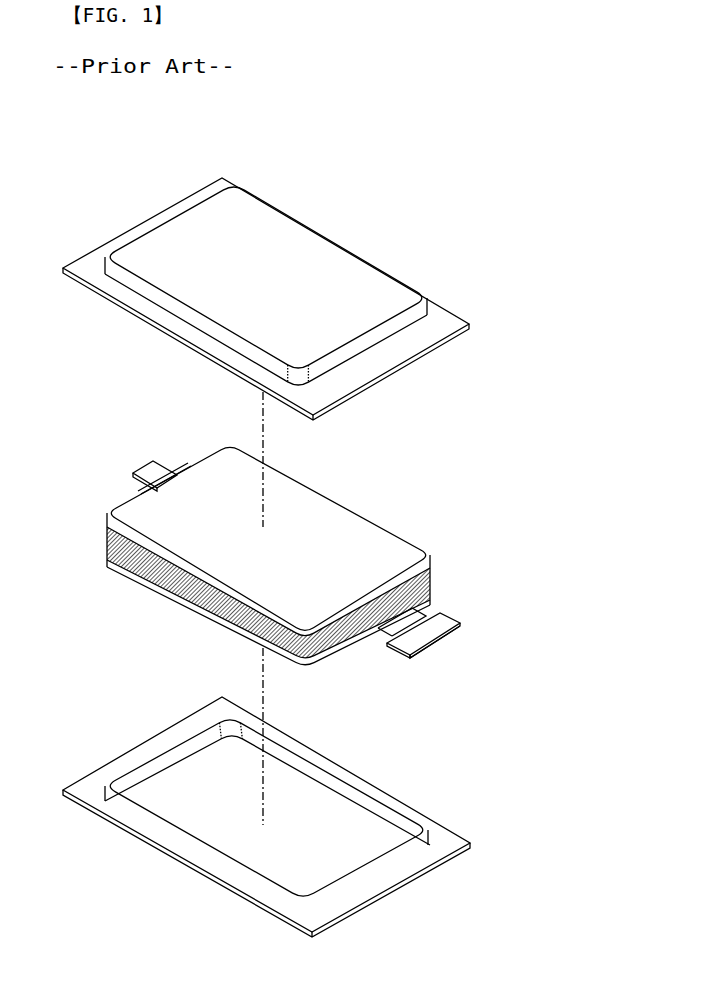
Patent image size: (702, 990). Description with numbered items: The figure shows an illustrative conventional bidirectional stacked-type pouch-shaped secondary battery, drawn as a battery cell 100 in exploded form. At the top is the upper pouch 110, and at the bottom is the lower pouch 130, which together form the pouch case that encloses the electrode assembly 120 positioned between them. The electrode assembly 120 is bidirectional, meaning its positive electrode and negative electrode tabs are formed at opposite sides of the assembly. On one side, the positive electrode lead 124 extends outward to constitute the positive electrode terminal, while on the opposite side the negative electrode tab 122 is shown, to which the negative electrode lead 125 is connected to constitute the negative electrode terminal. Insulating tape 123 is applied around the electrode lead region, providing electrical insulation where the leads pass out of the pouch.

The battery cell 100 is at (165, 492).
The upper pouch 110 is at (415, 281).
The electrode assembly 120 is at (392, 522).
The negative electrode tab 122 is at (390, 618).
The insulating tape 123 is at (443, 613).
The positive electrode lead 124 is at (152, 460).
The negative electrode lead 125 is at (433, 657).
The lower pouch 130 is at (412, 815).